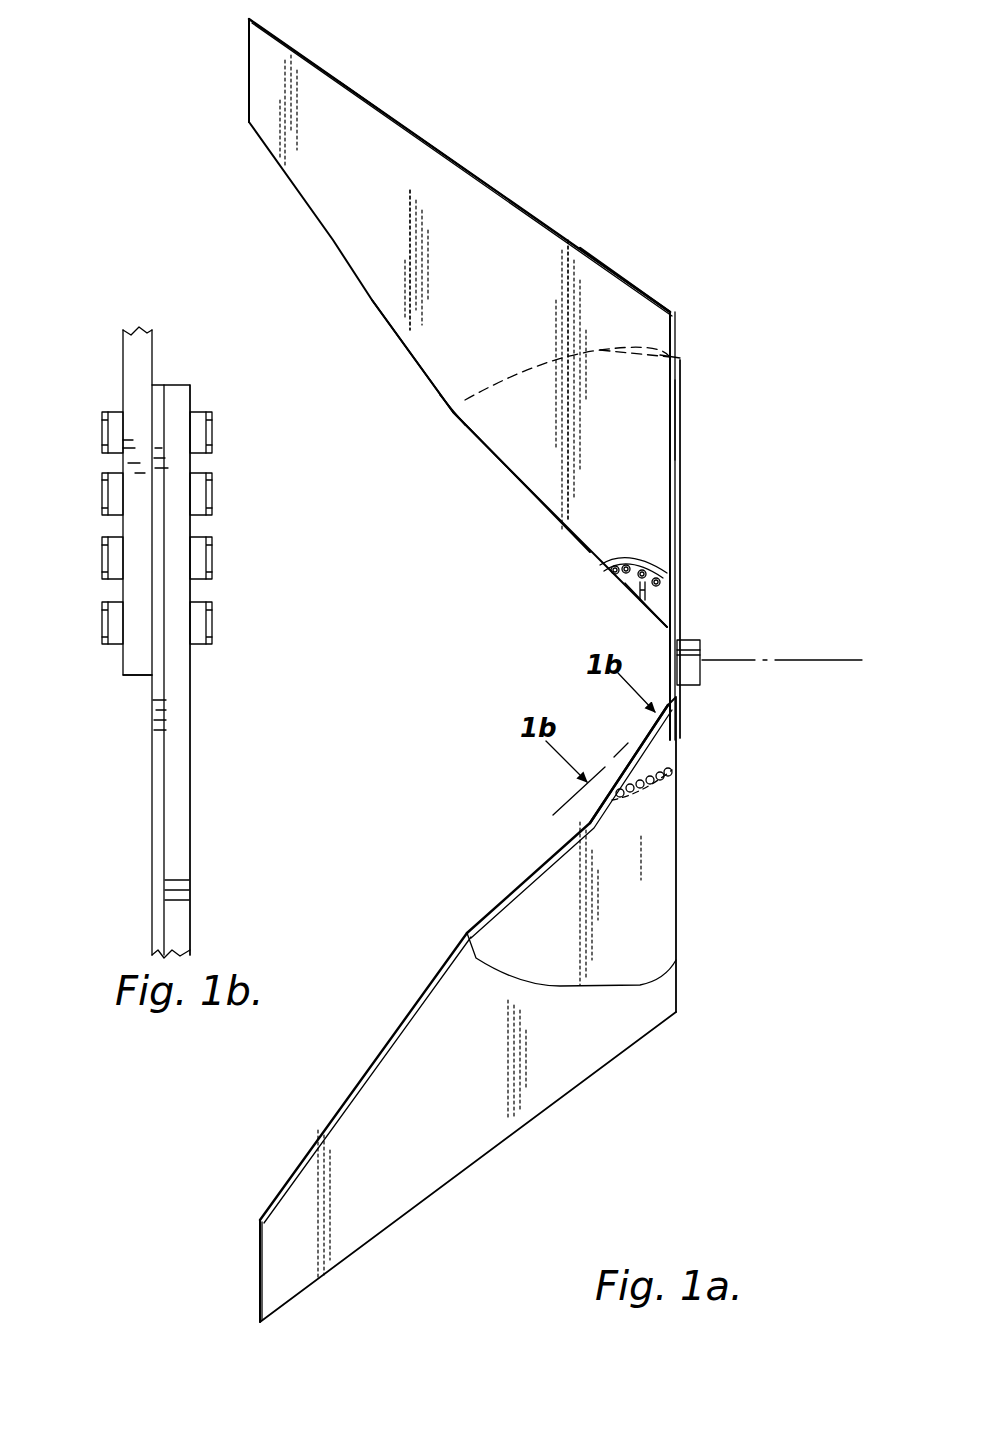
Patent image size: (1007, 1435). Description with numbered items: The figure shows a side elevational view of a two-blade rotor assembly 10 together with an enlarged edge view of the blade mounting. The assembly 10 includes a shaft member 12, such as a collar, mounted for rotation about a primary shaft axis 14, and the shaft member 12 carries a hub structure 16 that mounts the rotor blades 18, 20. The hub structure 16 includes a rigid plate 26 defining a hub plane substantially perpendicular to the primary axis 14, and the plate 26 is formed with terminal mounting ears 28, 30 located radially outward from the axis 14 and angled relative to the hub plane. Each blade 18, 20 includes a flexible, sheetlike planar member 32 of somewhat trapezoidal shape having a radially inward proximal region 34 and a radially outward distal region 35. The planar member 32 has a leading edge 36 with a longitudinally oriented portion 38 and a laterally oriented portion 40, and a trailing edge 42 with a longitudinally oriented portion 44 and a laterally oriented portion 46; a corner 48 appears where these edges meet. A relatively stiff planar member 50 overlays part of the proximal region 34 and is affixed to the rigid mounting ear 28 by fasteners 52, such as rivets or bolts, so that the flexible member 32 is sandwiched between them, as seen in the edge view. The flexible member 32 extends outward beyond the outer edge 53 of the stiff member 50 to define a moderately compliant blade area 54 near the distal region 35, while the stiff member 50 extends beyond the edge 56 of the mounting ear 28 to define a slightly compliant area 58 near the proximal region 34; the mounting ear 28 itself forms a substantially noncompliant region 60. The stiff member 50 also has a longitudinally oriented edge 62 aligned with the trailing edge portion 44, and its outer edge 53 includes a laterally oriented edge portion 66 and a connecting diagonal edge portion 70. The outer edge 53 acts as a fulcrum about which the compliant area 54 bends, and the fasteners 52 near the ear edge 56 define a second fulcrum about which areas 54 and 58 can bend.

In FIG. 1A, the rotor assembly 10 is at (748, 184).
In FIG. 1A, the shaft member 12 is at (693, 636).
In FIG. 1A, the primary shaft axis 14 is at (805, 660).
In FIG. 1A, the hub structure 16 is at (678, 705).
In FIG. 1A, the rotor blade 18 is at (512, 170).
In FIG. 1A, the rotor blade 20 is at (530, 1140).
In FIG. 1A, the rigid plate 26 is at (665, 632).
In FIG. 1A, the terminal mounting ear 28 is at (674, 577).
In FIG. 1A, the terminal mounting ear 30 is at (640, 740).
In FIG. 1B, the terminal mounting ear 30 is at (123, 355).
In FIG. 1A, the flexible planar member 32 is at (530, 248).
In FIG. 1B, the flexible planar member 32 is at (160, 385).
In FIG. 1A, the proximal region 34 is at (650, 531).
In FIG. 1A, the distal region 35 is at (287, 45).
In FIG. 1A, the leading edge 36 is at (449, 139).
In FIG. 1A, the longitudinally oriented portion 38 is at (378, 100).
In FIG. 1A, the laterally oriented portion 40 is at (676, 341).
In FIG. 1A, the trailing edge 42 is at (396, 341).
In FIG. 1A, the longitudinally oriented portion 44 is at (480, 443).
In FIG. 1A, the laterally oriented portion 46 is at (249, 90).
In FIG. 1A, the corner 48 is at (676, 357).
In FIG. 1A, the stiff planar member 50 is at (680, 462).
In FIG. 1B, the stiff planar member 50 is at (192, 737).
In FIG. 1A, the fasteners 52 is at (610, 570).
In FIG. 1B, the fasteners 52 is at (98, 641).
In FIG. 1A, the outer edge 53 is at (493, 380).
In FIG. 1A, the compliant blade area 54 is at (389, 203).
In FIG. 1A, the edge 56 is at (633, 553).
In FIG. 1B, the edge 56 is at (130, 677).
In FIG. 1A, the slightly compliant area 58 is at (632, 438).
In FIG. 1A, the noncompliant region 60 is at (625, 583).
In FIG. 1A, the longitudinally oriented edge 62 is at (518, 482).
In FIG. 1A, the laterally oriented edge portion 66 is at (463, 407).
In FIG. 1A, the diagonal edge portion 70 is at (538, 362).